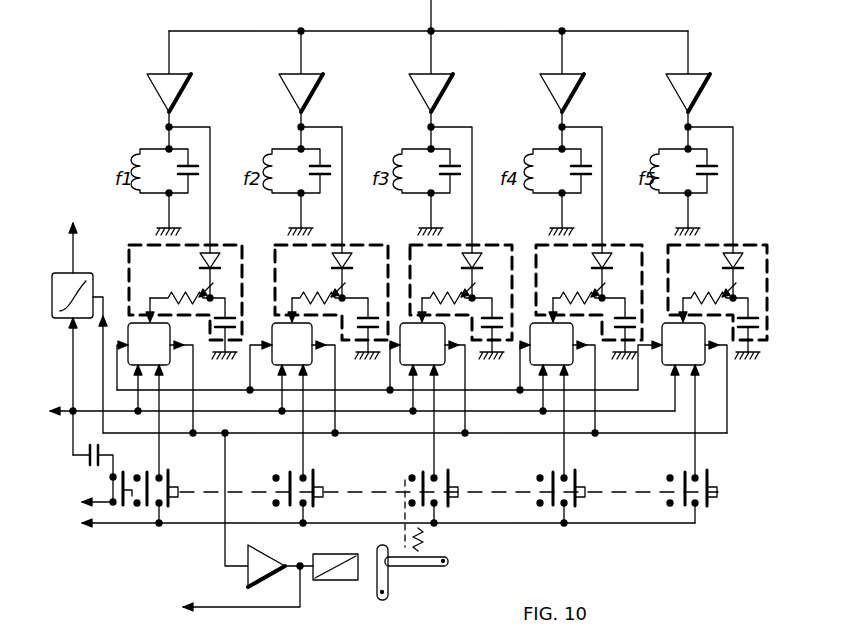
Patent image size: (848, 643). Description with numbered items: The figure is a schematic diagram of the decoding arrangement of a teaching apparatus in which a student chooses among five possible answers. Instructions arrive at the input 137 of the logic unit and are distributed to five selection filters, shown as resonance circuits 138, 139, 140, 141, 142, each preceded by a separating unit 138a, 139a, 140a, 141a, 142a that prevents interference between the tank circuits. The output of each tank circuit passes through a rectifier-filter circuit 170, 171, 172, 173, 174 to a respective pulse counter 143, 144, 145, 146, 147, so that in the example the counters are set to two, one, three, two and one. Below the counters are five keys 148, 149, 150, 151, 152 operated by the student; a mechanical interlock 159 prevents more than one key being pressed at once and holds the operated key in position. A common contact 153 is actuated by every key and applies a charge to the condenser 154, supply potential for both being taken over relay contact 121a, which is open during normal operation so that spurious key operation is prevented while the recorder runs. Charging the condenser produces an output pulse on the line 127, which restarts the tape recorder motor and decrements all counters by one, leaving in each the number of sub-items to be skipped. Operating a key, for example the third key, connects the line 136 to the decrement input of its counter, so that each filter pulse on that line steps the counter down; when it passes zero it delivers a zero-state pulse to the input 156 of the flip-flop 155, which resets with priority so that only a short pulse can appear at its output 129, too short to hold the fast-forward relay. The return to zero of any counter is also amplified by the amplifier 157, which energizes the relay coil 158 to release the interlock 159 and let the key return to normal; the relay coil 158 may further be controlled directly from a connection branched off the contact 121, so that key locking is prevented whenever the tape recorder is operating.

The contact 121 is at (224, 594).
The relay contact 121a is at (75, 499).
The line 127 is at (357, 399).
The output 129 is at (67, 236).
The line 136 is at (371, 534).
The input 137 is at (451, 15).
The resonance circuit 138 is at (152, 123).
The resonance circuit 139 is at (284, 123).
The resonance circuit 140 is at (413, 123).
The resonance circuit 141 is at (545, 123).
The resonance circuit 142 is at (672, 123).
The separating unit 138a is at (189, 82).
The separating unit 139a is at (321, 82).
The separating unit 140a is at (451, 82).
The separating unit 141a is at (581, 82).
The separating unit 142a is at (707, 82).
The pulse counter 143 is at (162, 356).
The pulse counter 144 is at (296, 362).
The pulse counter 145 is at (428, 363).
The pulse counter 146 is at (558, 364).
The pulse counter 147 is at (692, 364).
The key 148 is at (167, 482).
The key 149 is at (318, 482).
The key 150 is at (450, 482).
The key 151 is at (588, 472).
The key 152 is at (720, 472).
The contact 153 is at (137, 468).
The condenser 154 is at (89, 465).
The flip-flop 155 is at (85, 273).
The input 156 is at (94, 294).
The amplifier 157 is at (269, 564).
The relay coil 158 is at (329, 562).
The mechanical interlock 159 is at (398, 574).
The rectifier-filter circuit 170 is at (185, 302).
The rectifier-filter circuit 171 is at (332, 292).
The rectifier-filter circuit 172 is at (473, 294).
The rectifier-filter circuit 173 is at (600, 293).
The rectifier-filter circuit 174 is at (726, 293).